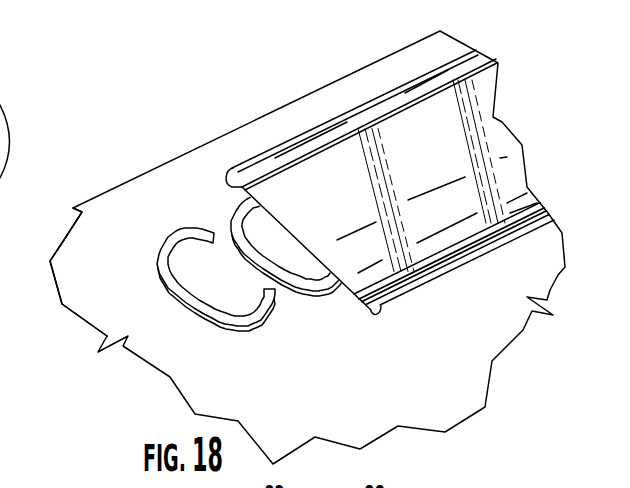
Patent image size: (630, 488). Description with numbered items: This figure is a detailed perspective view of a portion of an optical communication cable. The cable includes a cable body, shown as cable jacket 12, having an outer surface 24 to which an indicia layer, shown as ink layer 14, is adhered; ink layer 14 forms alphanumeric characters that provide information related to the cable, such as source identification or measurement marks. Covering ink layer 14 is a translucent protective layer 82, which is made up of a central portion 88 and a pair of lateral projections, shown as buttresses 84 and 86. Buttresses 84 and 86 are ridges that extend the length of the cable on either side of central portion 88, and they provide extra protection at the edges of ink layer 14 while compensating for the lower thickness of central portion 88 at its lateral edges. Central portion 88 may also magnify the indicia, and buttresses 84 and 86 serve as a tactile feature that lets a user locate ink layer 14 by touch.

The cable jacket 12 is at (114, 214).
The ink layer 14 is at (207, 205).
The outer surface 24 is at (81, 284).
The protective layer 82 is at (362, 160).
The buttress 84 is at (293, 155).
The buttress 86 is at (490, 245).
The central portion 88 is at (476, 137).